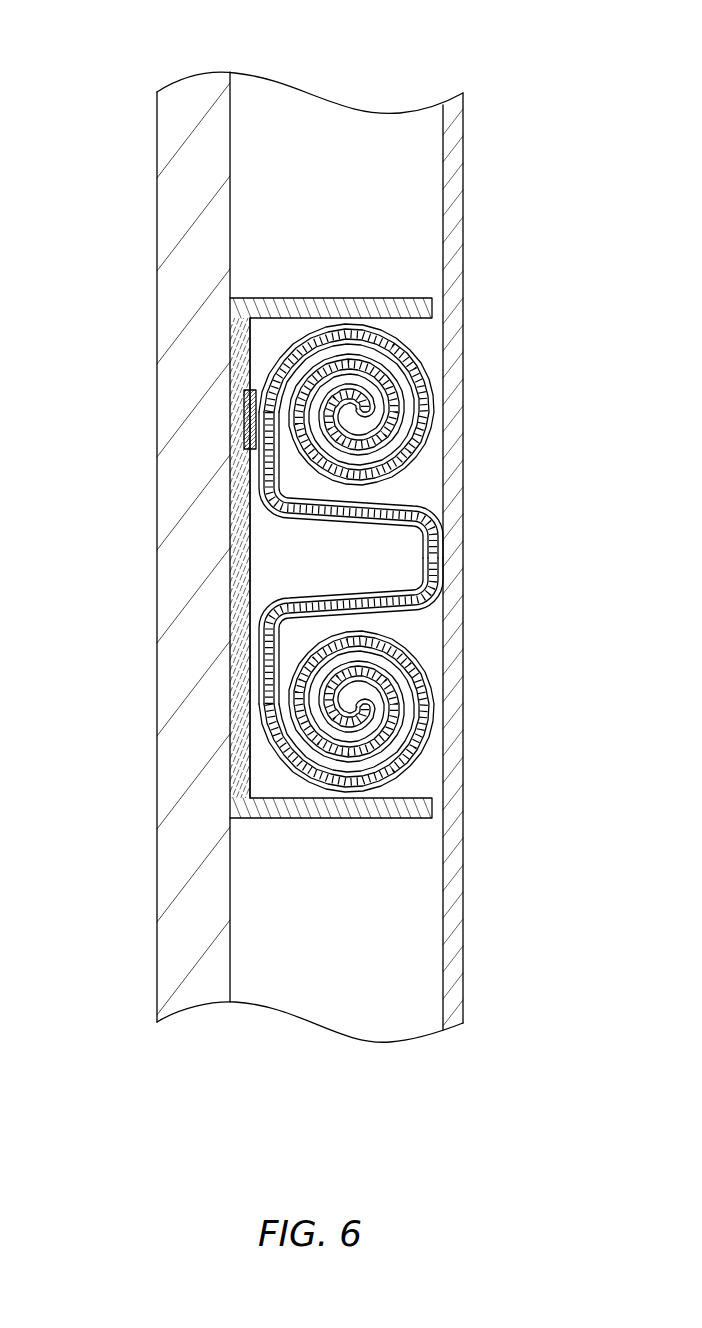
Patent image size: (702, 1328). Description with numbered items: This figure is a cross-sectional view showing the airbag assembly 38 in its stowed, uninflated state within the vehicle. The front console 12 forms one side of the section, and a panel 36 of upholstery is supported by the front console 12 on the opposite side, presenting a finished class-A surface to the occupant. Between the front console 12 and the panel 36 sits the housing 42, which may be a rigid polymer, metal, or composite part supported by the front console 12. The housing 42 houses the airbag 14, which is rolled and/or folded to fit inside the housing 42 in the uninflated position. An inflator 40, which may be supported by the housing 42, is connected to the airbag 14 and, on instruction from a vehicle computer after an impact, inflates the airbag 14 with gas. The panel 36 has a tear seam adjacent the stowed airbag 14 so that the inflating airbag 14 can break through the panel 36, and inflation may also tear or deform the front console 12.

The front console 12 is at (192, 93).
The airbag 14 is at (430, 343).
The panel 36 is at (452, 200).
The airbag assembly 38 is at (230, 521).
The inflator 40 is at (245, 417).
The housing 42 is at (240, 333).